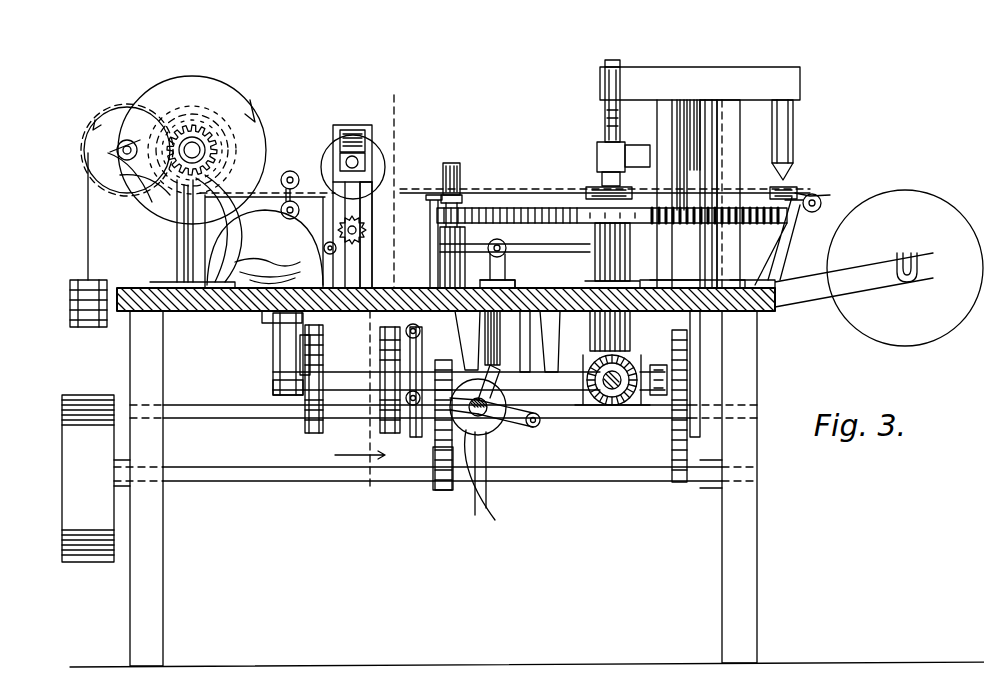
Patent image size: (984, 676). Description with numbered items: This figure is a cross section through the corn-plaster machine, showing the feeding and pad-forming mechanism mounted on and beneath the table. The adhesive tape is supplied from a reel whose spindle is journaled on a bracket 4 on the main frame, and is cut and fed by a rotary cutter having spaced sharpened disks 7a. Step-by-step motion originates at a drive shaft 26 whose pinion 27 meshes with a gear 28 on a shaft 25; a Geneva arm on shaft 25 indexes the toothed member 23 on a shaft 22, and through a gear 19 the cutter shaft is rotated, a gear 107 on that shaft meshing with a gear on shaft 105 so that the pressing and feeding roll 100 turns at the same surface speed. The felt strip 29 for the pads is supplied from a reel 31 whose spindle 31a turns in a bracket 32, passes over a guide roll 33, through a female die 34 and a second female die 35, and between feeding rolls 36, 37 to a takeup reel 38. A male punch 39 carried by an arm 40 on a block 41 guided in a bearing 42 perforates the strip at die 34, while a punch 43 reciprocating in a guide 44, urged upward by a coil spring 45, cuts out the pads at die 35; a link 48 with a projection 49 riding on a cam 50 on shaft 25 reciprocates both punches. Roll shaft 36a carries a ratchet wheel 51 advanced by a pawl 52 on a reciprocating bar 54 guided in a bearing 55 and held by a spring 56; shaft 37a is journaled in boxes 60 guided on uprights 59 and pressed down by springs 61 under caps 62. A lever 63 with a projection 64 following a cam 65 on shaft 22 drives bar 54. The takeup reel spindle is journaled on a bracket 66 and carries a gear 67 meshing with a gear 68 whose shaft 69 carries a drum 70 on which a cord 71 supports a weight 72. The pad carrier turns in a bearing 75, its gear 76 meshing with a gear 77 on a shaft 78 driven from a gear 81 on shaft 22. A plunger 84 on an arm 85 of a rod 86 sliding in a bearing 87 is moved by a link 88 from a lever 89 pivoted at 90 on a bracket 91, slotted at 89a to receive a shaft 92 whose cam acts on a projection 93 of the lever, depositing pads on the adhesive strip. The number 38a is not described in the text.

The bracket 4 is at (380, 292).
The disk of cutter 7a is at (262, 320).
The gear 19 is at (420, 330).
The shaft 22 is at (360, 443).
The toothed member of Geneva movement 23 is at (380, 340).
The shaft 25 is at (193, 412).
The drive shaft 26 is at (581, 483).
The pinion 27 is at (444, 490).
The gear 28 is at (442, 450).
The strip of felt 29 is at (506, 207).
The reel 31 is at (905, 268).
The spindle 31a is at (920, 265).
The bracket 32 is at (815, 298).
The guide roll 33 is at (812, 213).
The female die 34 is at (812, 193).
The second female die 35 is at (596, 188).
The feeding roll 36 is at (374, 230).
The shaft of roll 36 36a is at (324, 249).
The feeding roll 37 is at (296, 190).
The shaft of roll 37 37a is at (292, 200).
The takeup reel 38 is at (248, 124).
The reel gear 38a is at (207, 132).
The male punch 39 is at (797, 190).
The arm 40 is at (785, 100).
The block 41 is at (709, 100).
The way or bearing 42 is at (730, 100).
The punch 43 is at (597, 152).
The guide 44 is at (632, 146).
The coil spring 45 is at (606, 120).
The rod or link 48 is at (690, 363).
The projection 49 is at (722, 428).
The cam 50 is at (722, 452).
The ratchet wheel 51 is at (296, 215).
The ratchet pawl or dog 52 is at (290, 171).
The reciprocative rod or bar 54 is at (298, 276).
The bearing 55 is at (250, 264).
The spring 56 is at (282, 248).
The brackets or uprights 59 is at (358, 243).
The boxes 60 is at (385, 166).
The springs 61 is at (360, 150).
The caps 62 is at (344, 125).
The lever 63 is at (320, 432).
The projection 64 is at (282, 390).
The cam 65 is at (273, 347).
The bracket 66 is at (177, 240).
The gear 67 is at (194, 136).
The gear 68 is at (152, 194).
The shaft 69 is at (127, 139).
The drum 70 is at (110, 152).
The cord 71 is at (88, 252).
The weight 72 is at (70, 307).
The bearing 75 is at (614, 276).
The gear 76 is at (598, 352).
The gear 77 is at (626, 402).
The shaft 78 is at (614, 405).
The gear 81 is at (588, 367).
The plunger 84 is at (466, 227).
The arm 85 is at (452, 195).
The rod 86 is at (450, 163).
The bearing 87 is at (440, 215).
The link 88 is at (423, 352).
The lever 89 is at (497, 422).
The slot 89a is at (492, 522).
The pivot 90 is at (540, 424).
The bracket 91 is at (575, 400).
The shaft 92 is at (500, 470).
The projection 93 is at (515, 253).
The pressing and feeding roll 100 is at (506, 244).
The shaft 105 is at (515, 281).
The gear 107 is at (506, 254).